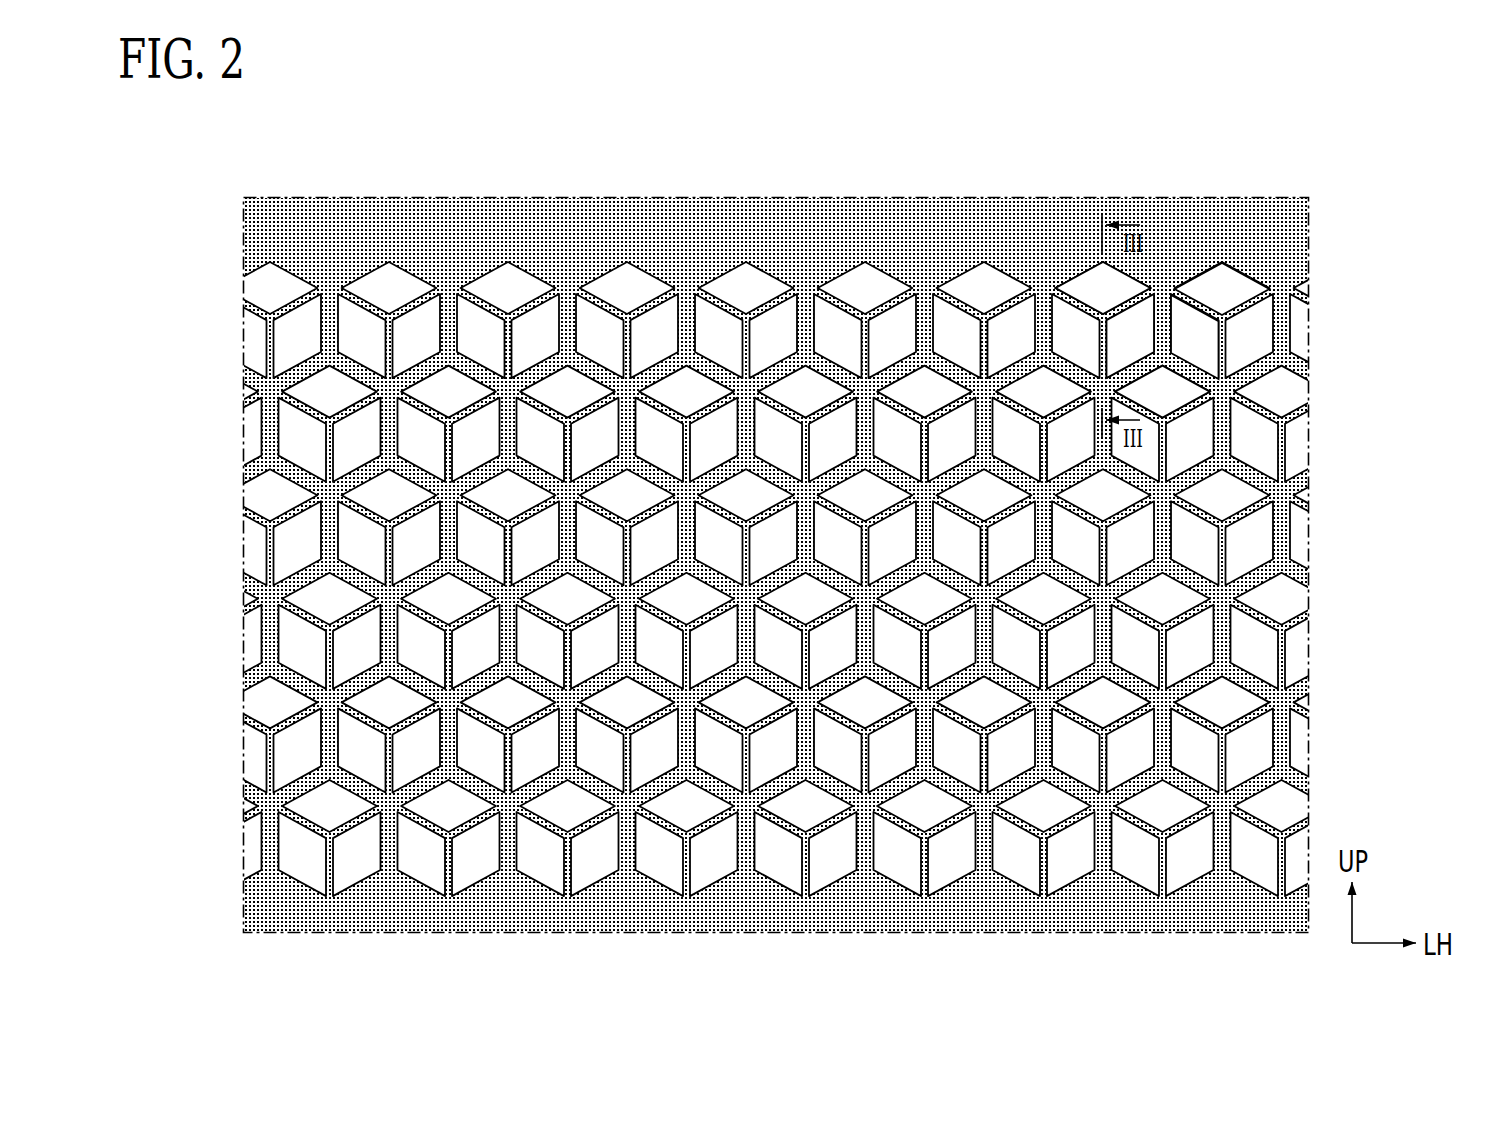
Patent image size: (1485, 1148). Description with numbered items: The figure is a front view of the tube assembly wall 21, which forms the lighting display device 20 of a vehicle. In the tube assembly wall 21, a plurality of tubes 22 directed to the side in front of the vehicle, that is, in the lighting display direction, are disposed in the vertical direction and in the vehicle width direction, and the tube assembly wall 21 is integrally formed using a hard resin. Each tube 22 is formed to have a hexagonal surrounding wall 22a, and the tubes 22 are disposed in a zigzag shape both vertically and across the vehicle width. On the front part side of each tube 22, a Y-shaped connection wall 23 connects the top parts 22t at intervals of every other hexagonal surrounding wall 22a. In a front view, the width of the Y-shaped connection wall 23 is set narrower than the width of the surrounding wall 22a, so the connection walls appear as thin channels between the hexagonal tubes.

The lighting display device 20 is at (776, 505).
The tube assembly wall 21 is at (776, 505).
The tube 22 is at (1062, 281).
The top part 22t is at (1056, 291).
The hexagonal surrounding wall 22a is at (1172, 352).
The Y-shaped connection wall 23 is at (1118, 306).